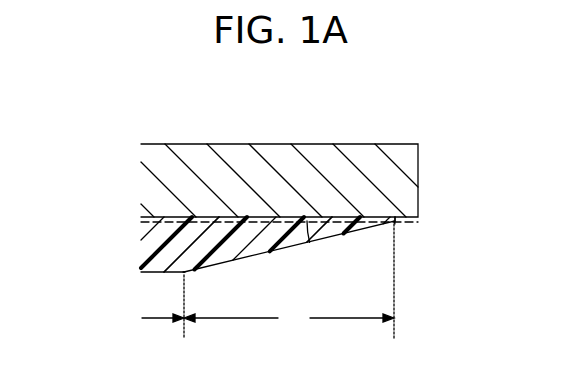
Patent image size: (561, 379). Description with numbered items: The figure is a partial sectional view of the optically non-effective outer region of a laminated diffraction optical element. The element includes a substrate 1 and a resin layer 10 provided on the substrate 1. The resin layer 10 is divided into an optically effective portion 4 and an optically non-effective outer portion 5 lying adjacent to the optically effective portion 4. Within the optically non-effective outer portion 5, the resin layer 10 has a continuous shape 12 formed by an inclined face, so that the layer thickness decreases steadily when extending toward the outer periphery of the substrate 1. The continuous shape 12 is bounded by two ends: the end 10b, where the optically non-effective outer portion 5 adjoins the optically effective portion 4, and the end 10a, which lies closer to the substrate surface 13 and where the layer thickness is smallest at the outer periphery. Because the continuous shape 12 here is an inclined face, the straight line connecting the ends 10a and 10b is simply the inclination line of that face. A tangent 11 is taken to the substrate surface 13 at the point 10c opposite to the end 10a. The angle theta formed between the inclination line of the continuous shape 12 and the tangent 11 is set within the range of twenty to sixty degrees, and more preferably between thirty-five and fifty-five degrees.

The substrate 1 is at (222, 146).
The resin layer 10 is at (172, 250).
The end of the continuous shape 10a is at (397, 224).
The end of the continuous shape 10b is at (186, 274).
The point opposite to the end 10c is at (395, 218).
The tangent 11 is at (346, 222).
The continuous shape 12 is at (273, 249).
The substrate surface 13 is at (222, 221).
The optically effective portion 4 is at (153, 306).
The optically non-effective outer portion 5 is at (289, 281).
The angle theta is at (295, 234).